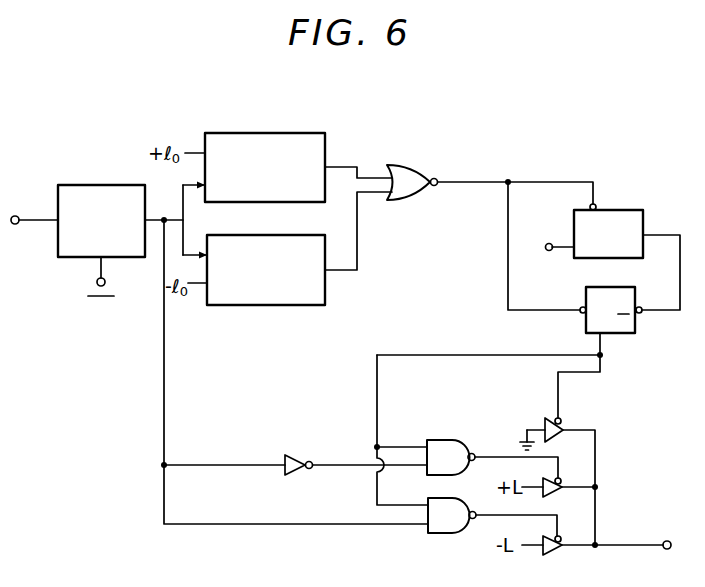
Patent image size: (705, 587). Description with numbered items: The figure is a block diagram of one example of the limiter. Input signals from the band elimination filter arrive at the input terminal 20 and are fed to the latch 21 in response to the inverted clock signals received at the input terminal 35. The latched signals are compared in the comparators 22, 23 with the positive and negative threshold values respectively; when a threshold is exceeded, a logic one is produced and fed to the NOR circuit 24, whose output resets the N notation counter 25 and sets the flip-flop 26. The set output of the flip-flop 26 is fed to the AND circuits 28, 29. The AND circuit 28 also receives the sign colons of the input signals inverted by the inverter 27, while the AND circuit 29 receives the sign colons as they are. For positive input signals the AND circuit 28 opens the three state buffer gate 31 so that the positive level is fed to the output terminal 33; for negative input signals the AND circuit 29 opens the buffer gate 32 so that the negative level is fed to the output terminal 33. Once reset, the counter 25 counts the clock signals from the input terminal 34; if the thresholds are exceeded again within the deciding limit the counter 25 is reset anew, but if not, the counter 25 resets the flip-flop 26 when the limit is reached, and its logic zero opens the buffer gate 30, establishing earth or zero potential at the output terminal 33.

The input terminal 20 is at (18, 214).
The latch 21 is at (113, 192).
The comparator 22 is at (292, 142).
The comparator 23 is at (287, 297).
The NOR circuit 24 is at (418, 174).
The N notation counter 25 is at (628, 216).
The flip-flop 26 is at (612, 293).
The inverter 27 is at (298, 461).
The AND circuit 28 is at (450, 450).
The AND circuit 29 is at (448, 530).
The three state buffer gate 30 is at (565, 417).
The three state buffer gate 31 is at (572, 500).
The three state buffer gate 32 is at (553, 551).
The output terminal 33 is at (667, 540).
The input terminal 34 is at (549, 242).
The input terminal 35 is at (96, 284).